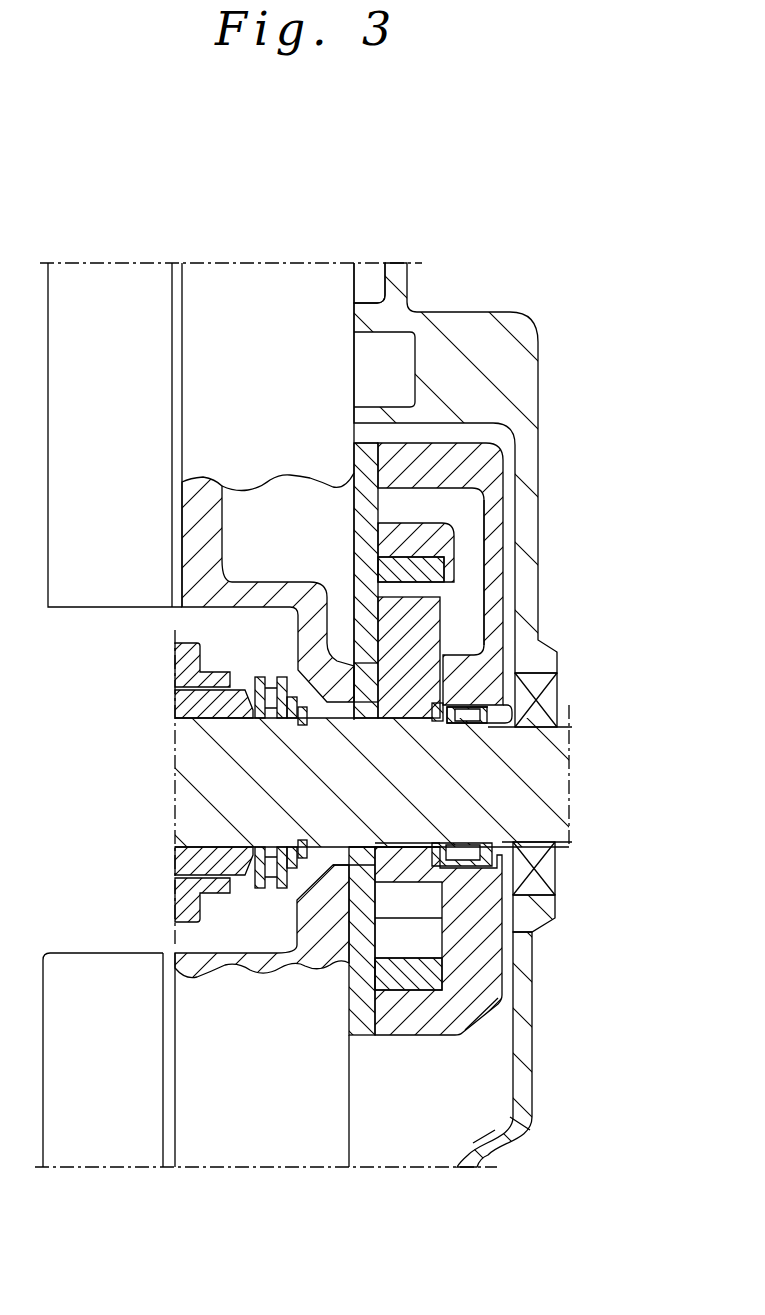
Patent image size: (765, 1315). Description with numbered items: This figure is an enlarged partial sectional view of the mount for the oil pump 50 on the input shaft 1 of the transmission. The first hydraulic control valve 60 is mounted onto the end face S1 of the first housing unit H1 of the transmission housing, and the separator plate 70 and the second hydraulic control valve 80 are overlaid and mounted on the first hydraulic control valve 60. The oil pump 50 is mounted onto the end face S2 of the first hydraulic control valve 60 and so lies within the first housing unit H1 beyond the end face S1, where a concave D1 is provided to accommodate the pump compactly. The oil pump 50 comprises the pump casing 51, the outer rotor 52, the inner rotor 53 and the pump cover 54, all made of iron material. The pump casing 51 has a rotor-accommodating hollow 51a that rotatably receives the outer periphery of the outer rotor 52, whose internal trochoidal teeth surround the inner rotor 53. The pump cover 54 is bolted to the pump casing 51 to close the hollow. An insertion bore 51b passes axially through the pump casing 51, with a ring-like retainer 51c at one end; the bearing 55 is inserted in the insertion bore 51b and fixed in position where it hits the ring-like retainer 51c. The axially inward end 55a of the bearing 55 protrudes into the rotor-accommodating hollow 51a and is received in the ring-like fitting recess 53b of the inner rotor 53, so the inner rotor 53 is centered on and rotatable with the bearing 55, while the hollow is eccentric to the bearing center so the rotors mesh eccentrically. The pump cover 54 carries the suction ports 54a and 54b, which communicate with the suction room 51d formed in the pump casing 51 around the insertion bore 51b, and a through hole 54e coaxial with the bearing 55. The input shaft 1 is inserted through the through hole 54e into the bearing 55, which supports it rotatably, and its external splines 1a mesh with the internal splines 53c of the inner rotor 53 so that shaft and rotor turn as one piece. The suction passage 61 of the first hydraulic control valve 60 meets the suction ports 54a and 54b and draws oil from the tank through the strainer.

The input shaft 1 is at (348, 787).
The external splines 1a is at (418, 823).
The oil pump 50 is at (477, 696).
The pump casing 51 is at (495, 615).
The rotor-accommodating hollow 51a is at (417, 577).
The insertion bore 51b is at (462, 723).
The ring-like retainer 51c is at (496, 722).
The suction room 51d is at (470, 547).
The outer rotor 52 is at (438, 963).
The inner rotor 53 is at (483, 717).
The ring-like fitting recess 53b is at (438, 714).
The internal splines 53c is at (398, 843).
The pump cover 54 is at (326, 741).
The suction port 54a is at (358, 608).
The suction port 54b is at (365, 503).
The through hole 54e is at (360, 846).
The bearing 55 is at (472, 845).
The axially inward end 55a is at (409, 921).
The first hydraulic control valve 60 is at (275, 597).
The suction passage 61 is at (287, 540).
The separator plate 70 is at (180, 263).
The second hydraulic control valve 80 is at (111, 278).
The first housing unit H1 is at (470, 333).
The concave D1 is at (512, 1058).
The end face S1 is at (354, 313).
The end face S2 is at (349, 1088).